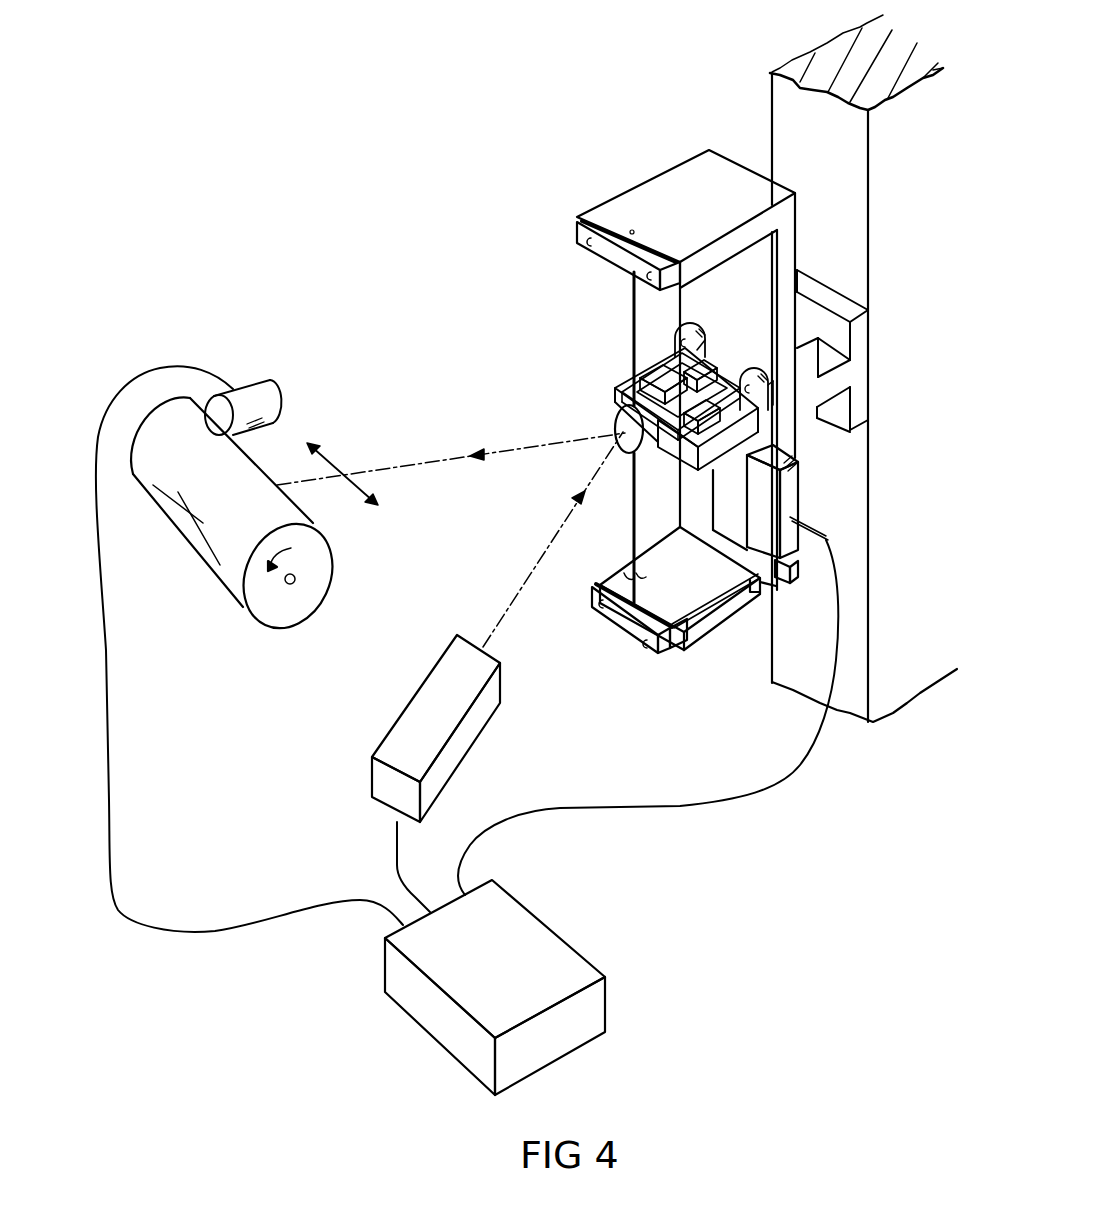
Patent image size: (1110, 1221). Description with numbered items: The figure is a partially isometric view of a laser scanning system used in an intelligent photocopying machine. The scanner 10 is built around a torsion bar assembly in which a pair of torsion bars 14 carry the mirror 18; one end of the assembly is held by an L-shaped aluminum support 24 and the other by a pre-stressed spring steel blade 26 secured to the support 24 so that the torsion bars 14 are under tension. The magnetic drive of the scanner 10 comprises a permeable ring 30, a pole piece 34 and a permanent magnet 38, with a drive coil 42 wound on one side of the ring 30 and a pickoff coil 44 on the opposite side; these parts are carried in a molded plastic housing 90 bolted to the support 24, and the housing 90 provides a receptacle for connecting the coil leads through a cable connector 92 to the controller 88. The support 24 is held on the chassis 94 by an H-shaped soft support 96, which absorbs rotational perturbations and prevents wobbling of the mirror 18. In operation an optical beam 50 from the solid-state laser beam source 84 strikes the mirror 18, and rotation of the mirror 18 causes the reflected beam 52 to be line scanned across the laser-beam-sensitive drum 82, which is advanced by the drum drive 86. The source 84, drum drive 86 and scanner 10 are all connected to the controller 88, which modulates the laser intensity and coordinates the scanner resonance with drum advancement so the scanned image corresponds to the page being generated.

The scanner 10 is at (630, 160).
The torsion bars 14 is at (631, 297).
The mirror 18 is at (614, 418).
The L-shaped aluminum support 24 is at (784, 333).
The spring steel blade 26 is at (711, 601).
The permeable ring 30 is at (722, 385).
The pole piece 34 is at (675, 382).
The permanent magnet 38 is at (703, 383).
The drive coil 42 is at (658, 380).
The pickoff coil 44 is at (708, 420).
The optical beam 50 is at (562, 527).
The reflected beam 52 is at (520, 447).
The laser-beam-sensitive drum 82 is at (297, 507).
The solid-state laser beam source 84 is at (480, 735).
The drum drive 86 is at (265, 403).
The controller 88 is at (557, 932).
The molded plastic housing 90 is at (760, 423).
The cable connector 92 is at (670, 804).
The chassis 94 is at (832, 170).
The H-shaped soft support 96 is at (842, 378).